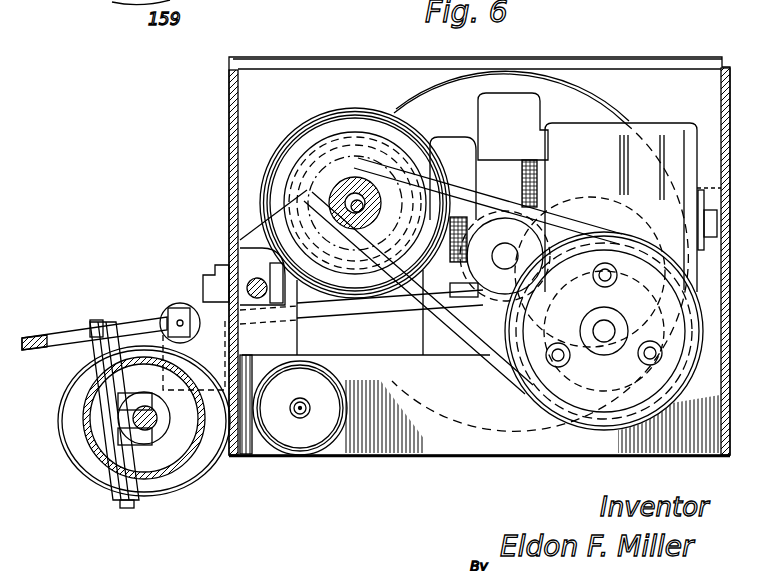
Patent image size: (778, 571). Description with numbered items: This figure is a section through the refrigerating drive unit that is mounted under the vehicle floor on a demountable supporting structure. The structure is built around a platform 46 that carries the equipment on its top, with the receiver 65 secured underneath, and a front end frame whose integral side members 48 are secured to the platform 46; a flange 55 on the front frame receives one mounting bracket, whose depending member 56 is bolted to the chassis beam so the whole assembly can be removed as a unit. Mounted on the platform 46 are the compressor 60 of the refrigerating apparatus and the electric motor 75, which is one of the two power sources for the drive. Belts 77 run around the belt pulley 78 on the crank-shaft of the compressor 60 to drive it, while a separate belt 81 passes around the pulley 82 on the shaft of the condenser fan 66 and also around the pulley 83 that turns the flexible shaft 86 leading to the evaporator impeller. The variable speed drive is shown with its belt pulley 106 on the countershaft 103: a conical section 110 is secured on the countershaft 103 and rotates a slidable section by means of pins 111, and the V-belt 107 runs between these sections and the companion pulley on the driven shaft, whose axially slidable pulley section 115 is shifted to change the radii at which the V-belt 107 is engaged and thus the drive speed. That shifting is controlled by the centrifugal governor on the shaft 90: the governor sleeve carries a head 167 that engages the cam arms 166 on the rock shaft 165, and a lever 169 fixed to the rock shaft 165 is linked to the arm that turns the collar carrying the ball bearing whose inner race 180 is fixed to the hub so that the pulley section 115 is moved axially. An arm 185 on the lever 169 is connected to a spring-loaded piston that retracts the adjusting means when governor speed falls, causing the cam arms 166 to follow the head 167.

The platform 46 is at (480, 362).
The side members 48 is at (232, 200).
The flange 55 is at (645, 56).
The depending member 56 is at (690, 62).
The compressor 60 is at (700, 165).
The receiver 65 is at (300, 408).
The fan 66 is at (520, 98).
The motor 75 is at (375, 142).
The belts 77 is at (496, 164).
The belt pulley 78 is at (714, 188).
The belt 81 is at (258, 245).
The pulley 82 is at (555, 192).
The pulley 83 is at (215, 264).
The flexible shaft 86 is at (262, 252).
The shaft 90 is at (158, 425).
The countershaft 103 is at (680, 320).
The belt pulley 106 is at (698, 279).
The V-belt 107 is at (360, 334).
The conical section 110 is at (700, 340).
The pins 111 is at (612, 282).
The pulley section 115 is at (322, 152).
The rock shaft 165 is at (130, 508).
The cam arms 166 is at (158, 487).
The head 167 is at (160, 430).
The lever 169 is at (46, 340).
The inner race 180 is at (318, 190).
The arm 185 is at (128, 330).